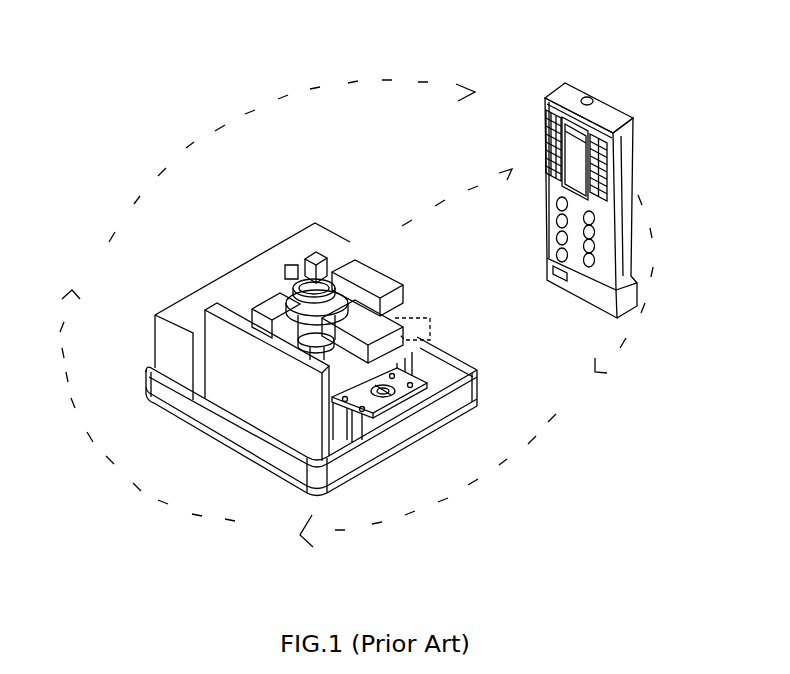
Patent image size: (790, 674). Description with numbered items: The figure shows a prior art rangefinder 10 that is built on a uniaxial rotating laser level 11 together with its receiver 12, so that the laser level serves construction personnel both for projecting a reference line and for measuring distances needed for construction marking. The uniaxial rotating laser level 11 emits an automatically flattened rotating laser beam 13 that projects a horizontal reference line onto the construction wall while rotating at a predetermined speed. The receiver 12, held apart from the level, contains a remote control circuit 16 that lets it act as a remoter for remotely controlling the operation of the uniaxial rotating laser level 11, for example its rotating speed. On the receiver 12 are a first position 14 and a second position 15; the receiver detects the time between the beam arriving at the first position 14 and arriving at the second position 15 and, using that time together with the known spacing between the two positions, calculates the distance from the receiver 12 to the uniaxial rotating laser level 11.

The rangefinder 10 is at (513, 587).
The uniaxial rotating laser level 11 is at (219, 293).
The receiver 12 is at (567, 93).
The rotating laser beam 13 is at (548, 157).
The first position 14 is at (545, 148).
The second position 15 is at (607, 150).
The remote control circuit 16 is at (590, 262).